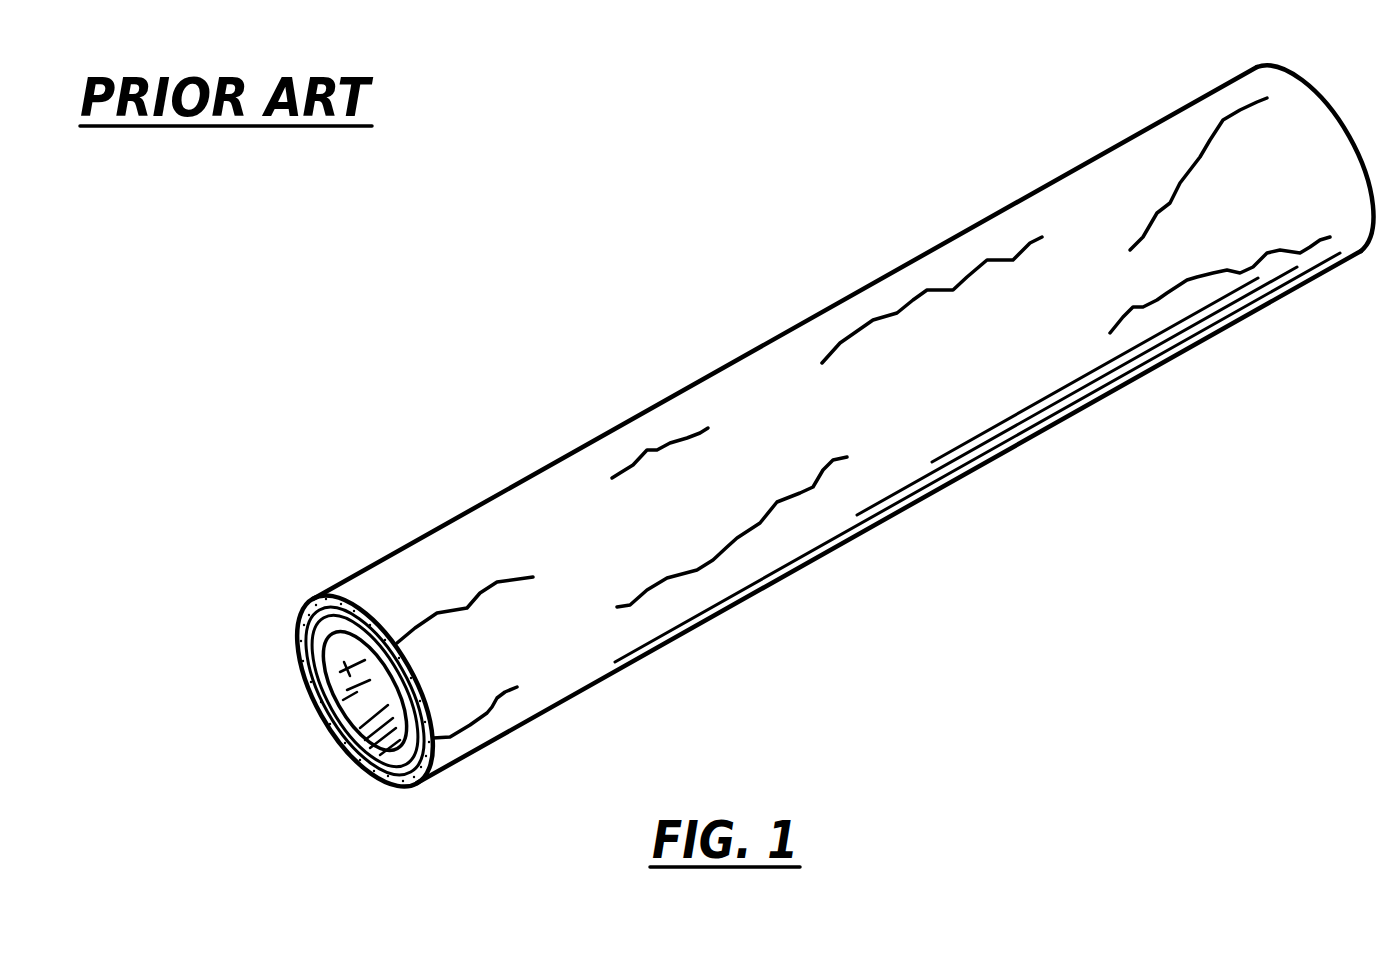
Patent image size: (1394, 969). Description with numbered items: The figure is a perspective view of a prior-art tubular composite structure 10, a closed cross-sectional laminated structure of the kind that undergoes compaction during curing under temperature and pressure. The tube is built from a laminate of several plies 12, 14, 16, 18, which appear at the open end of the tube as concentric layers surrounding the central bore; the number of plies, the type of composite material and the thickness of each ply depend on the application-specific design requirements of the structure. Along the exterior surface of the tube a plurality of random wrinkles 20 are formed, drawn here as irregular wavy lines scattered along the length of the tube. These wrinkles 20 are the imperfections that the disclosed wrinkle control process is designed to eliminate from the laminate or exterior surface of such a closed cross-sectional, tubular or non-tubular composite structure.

The tubular core (prior art) 10 is at (440, 506).
The ply 12 is at (330, 707).
The ply 14 is at (320, 687).
The ply 16 is at (317, 633).
The ply 18 is at (307, 613).
The wrinkles / creases 20 is at (1200, 157).